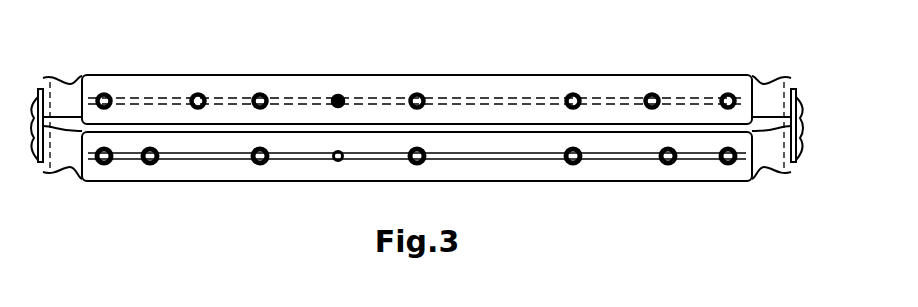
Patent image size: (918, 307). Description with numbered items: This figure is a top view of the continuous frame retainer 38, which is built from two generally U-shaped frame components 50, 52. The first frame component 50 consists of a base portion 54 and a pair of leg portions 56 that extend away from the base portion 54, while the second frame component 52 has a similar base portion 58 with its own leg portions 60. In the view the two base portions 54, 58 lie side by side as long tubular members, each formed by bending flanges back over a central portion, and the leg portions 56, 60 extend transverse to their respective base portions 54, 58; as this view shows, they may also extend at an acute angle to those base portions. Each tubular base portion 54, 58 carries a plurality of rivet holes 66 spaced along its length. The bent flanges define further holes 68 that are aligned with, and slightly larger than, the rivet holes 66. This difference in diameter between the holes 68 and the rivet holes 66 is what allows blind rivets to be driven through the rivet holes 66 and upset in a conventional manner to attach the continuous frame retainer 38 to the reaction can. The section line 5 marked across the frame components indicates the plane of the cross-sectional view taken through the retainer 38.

The continuous frame retainer 38 is at (630, 197).
The frame component 50 is at (520, 68).
The frame component 52 is at (497, 184).
The base portion 54 is at (318, 75).
The leg portions 56 is at (46, 80).
The base portion 58 is at (313, 182).
The leg portions 60 is at (40, 166).
The rivet holes 66 is at (194, 95).
The holes 68 is at (201, 92).
The section line 5- 5 is at (263, 148).